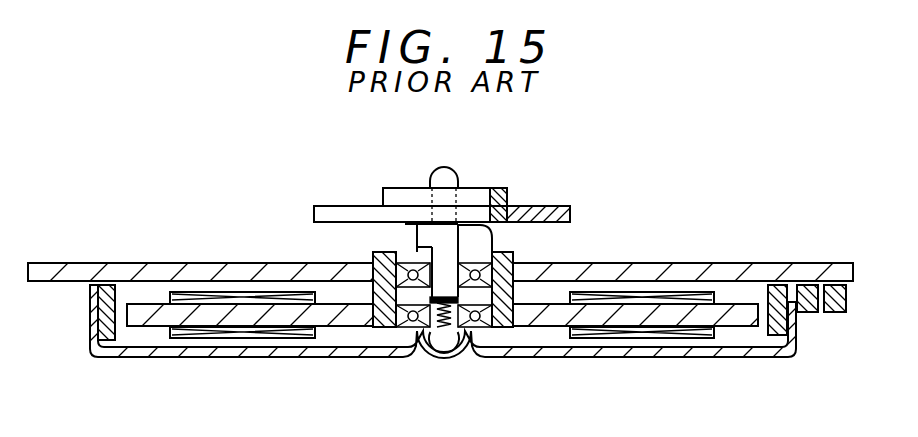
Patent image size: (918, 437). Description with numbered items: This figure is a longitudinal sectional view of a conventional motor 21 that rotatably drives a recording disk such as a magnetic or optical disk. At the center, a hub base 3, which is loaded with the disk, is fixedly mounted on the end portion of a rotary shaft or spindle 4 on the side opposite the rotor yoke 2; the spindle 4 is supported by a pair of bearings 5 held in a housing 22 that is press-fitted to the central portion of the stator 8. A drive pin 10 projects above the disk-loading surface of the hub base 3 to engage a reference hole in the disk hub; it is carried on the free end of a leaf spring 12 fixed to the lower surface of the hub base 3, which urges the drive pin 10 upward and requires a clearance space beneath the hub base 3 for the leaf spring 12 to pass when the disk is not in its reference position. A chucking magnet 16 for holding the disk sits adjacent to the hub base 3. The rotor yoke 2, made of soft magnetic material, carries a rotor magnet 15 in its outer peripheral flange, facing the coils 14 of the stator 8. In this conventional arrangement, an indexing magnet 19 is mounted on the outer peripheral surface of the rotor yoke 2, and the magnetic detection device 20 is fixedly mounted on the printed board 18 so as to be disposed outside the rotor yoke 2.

The rotor yoke 2 is at (275, 357).
The hub base 3 is at (477, 193).
The spindle 4 is at (441, 170).
The bearings 5 is at (402, 245).
The stator 8 is at (734, 294).
The drive pin 10 is at (440, 184).
The leaf spring 12 is at (506, 208).
The coils 14 is at (651, 290).
The rotor magnet 15 is at (100, 308).
The chucking magnet 16 is at (560, 205).
The printed board 18 is at (135, 263).
The indexing magnet 19 is at (806, 313).
The magnetic detection device 20 is at (835, 313).
The motor 21 is at (591, 368).
The housing 22 is at (500, 250).